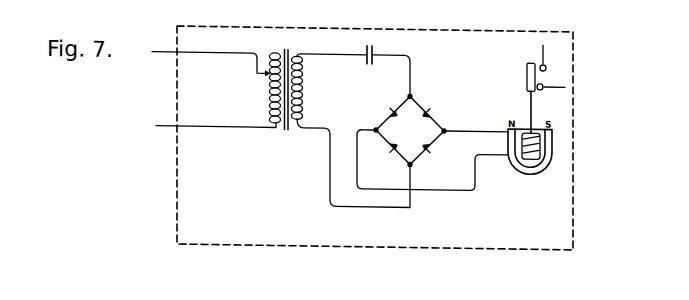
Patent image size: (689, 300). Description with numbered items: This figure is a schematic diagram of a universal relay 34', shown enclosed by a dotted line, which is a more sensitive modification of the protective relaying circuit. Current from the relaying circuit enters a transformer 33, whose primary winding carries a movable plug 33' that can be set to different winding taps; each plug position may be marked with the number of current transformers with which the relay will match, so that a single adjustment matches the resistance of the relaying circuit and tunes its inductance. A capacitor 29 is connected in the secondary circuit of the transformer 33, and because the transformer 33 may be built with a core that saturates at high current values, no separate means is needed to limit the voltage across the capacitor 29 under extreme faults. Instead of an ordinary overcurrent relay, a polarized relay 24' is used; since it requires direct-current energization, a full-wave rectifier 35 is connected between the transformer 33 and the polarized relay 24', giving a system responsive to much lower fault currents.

The transformer 33 is at (289, 80).
The movable plug 33' is at (211, 77).
The capacitor 29 is at (368, 62).
The full-wave rectifier 35 is at (422, 135).
The polarized relay 24' is at (518, 111).
The universal relay 34' is at (392, 138).